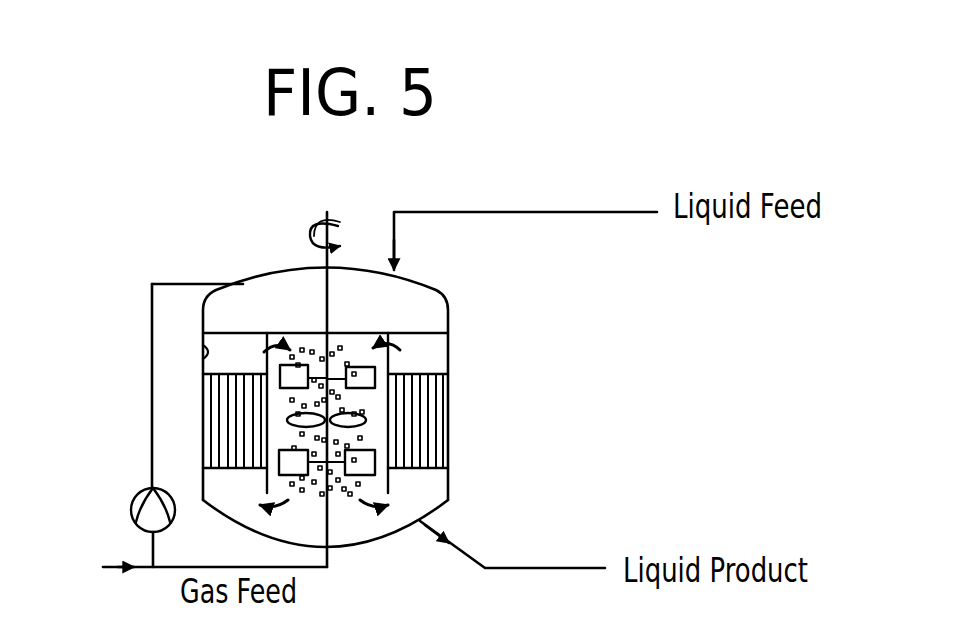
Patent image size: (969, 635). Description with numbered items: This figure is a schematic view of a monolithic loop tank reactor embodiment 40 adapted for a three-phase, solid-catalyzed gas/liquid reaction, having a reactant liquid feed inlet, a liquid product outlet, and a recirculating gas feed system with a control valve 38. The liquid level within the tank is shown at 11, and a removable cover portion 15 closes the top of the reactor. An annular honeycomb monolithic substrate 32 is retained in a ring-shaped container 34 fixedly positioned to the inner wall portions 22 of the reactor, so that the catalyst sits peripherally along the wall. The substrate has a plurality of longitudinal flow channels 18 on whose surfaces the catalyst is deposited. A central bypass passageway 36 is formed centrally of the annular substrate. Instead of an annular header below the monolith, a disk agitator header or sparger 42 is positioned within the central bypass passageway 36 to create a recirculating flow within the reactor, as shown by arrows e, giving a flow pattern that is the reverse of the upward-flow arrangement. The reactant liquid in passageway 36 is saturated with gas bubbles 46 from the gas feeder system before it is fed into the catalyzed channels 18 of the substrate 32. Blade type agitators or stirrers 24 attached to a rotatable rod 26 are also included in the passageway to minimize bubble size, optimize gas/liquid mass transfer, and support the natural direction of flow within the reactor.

The monolithic loop reactor embodiment 40 is at (210, 246).
The removable cover portion 15 is at (287, 268).
The rotatable rod or shaft 26 is at (337, 230).
The liquid level 11 is at (283, 338).
The inner wall portions 22 is at (203, 350).
The annular honeycomb monolithic substrate 32 is at (413, 372).
The longitudinal flow channels 18 is at (418, 421).
The central bypass passageway 36 is at (283, 403).
The gas bubbles 46 is at (290, 435).
The blade type agitator 24 is at (365, 460).
The annular container 34 is at (390, 478).
The control valve 38 is at (130, 507).
The disk agitator header or sparger 42 is at (344, 491).
The flow arrows e is at (374, 345).